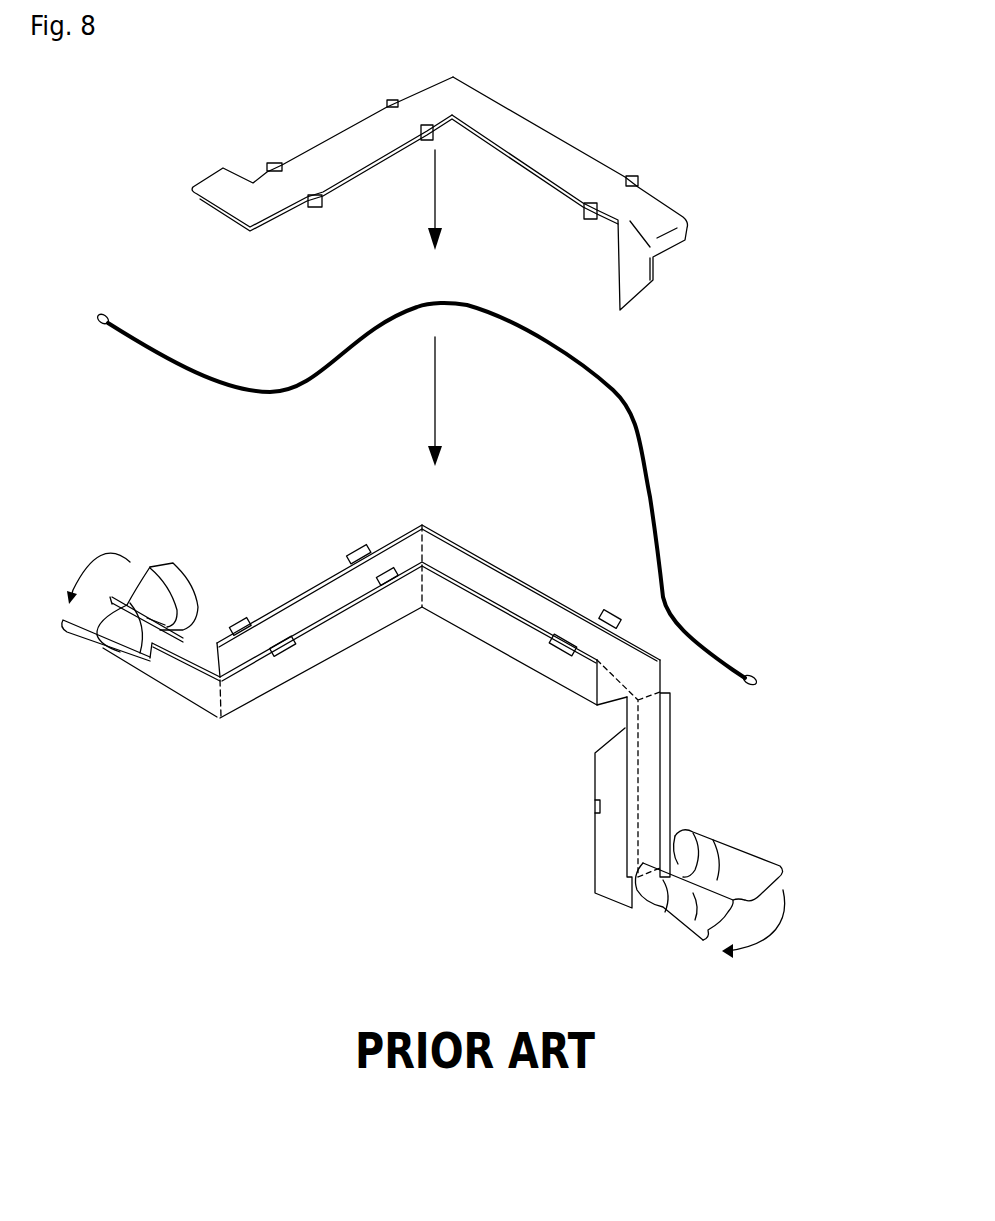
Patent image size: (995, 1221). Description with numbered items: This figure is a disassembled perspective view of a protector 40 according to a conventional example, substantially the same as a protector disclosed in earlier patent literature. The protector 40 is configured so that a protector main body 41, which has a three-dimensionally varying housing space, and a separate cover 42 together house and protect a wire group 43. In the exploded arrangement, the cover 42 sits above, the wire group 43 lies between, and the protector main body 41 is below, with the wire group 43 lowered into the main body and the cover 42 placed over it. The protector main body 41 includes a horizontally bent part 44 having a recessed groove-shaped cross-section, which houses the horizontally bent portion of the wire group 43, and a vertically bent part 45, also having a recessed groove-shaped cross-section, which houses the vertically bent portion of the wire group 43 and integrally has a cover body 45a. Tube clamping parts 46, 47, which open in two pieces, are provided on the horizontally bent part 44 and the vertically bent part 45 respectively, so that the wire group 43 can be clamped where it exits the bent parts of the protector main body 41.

The protector 40 is at (457, 729).
The protector main body 41 is at (403, 716).
The cover 42 is at (540, 128).
The wire group 43 is at (617, 390).
The horizontally bent part 44 is at (337, 633).
The vertically bent part 45 is at (602, 784).
The cover body 45a is at (672, 708).
The tube clamping part 46 is at (157, 572).
The tube clamping part 47 is at (753, 867).